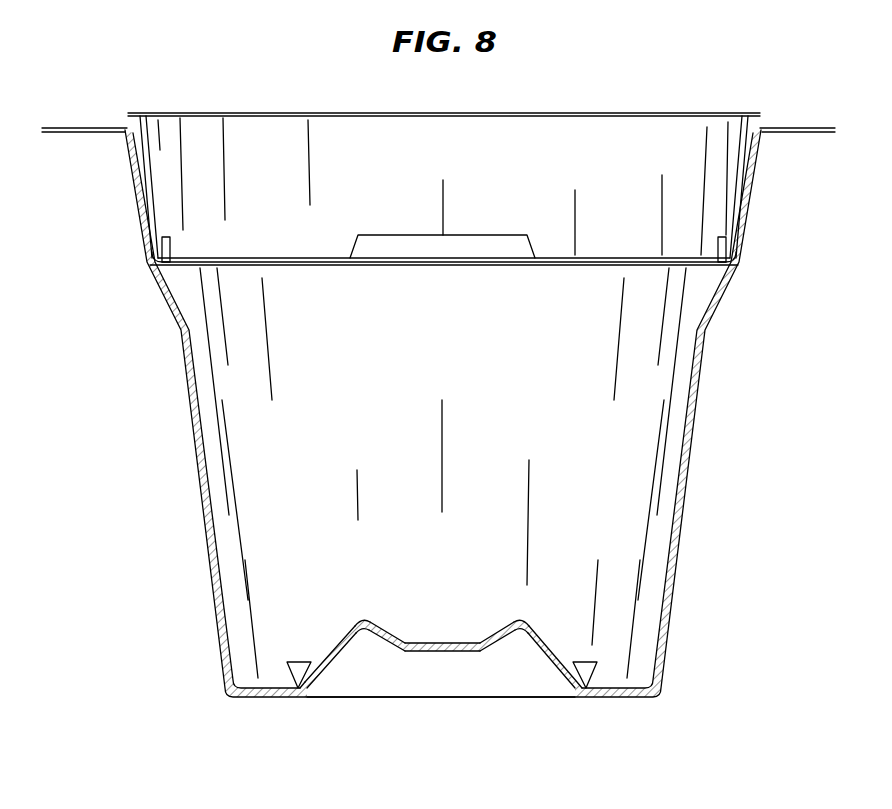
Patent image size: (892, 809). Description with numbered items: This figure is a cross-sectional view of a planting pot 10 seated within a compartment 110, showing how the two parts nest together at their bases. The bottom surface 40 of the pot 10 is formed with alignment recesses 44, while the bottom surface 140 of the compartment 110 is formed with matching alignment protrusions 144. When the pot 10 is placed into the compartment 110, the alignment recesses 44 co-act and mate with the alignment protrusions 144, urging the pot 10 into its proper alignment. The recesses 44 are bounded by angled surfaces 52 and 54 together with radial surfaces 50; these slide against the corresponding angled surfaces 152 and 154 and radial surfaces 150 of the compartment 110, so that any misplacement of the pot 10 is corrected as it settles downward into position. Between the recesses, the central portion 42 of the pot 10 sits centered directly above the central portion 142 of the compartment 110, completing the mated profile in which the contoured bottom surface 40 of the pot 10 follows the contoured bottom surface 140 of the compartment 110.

The pot 10 is at (453, 329).
The compartment 110 is at (727, 370).
The bottom surface 40 is at (272, 612).
The bottom surface 140 is at (288, 713).
The alignment recesses 44 is at (356, 603).
The alignment protrusions 144 is at (360, 662).
The radial surfaces 50 is at (323, 657).
The radial surfaces 150 is at (331, 658).
The angled surface 54 is at (384, 634).
The angled surface 154 is at (383, 661).
The central portion 42 is at (441, 641).
The central portion 142 is at (443, 655).
The angled surface 52 is at (492, 620).
The angled surface 152 is at (497, 658).